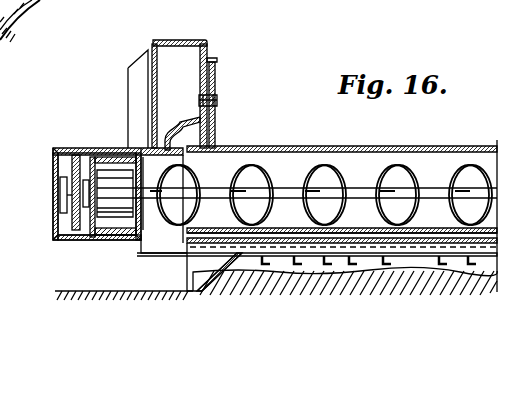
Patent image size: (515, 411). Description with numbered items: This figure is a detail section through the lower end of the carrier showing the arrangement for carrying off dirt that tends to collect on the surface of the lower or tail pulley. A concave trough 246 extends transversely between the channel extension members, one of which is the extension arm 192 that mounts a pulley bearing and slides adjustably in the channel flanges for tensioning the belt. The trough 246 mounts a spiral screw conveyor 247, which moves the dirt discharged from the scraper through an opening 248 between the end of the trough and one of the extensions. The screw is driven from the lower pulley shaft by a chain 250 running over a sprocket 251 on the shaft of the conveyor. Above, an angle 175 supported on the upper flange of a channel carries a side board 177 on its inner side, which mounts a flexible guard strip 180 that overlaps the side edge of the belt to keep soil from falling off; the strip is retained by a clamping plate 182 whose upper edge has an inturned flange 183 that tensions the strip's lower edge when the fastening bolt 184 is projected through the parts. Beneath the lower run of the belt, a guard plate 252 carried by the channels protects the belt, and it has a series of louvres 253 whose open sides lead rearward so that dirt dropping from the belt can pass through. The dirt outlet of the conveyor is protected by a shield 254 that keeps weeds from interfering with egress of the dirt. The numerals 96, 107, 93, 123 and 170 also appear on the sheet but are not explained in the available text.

The fragment of adjacent figure 96 is at (23, 21).
The fragment of adjacent figure 107 is at (268, 5).
The fragment of adjacent figure 93 is at (300, 5).
The trough top plate 123 is at (212, 147).
The conveyor trough 170 is at (346, 142).
The angle 175 is at (135, 103).
The side board 177 is at (208, 42).
The guard strip 180 is at (203, 128).
The clamping plate 182 is at (216, 82).
The inturned flange 183 is at (216, 61).
The fastening bolt 184 is at (218, 101).
The extension arm 192 is at (130, 148).
The concave trough 246 is at (263, 225).
The spiral screw conveyor 247 is at (300, 184).
The opening 248 is at (140, 255).
The chain 250 is at (57, 240).
The sprocket 251 is at (56, 210).
The guard plate 252 is at (190, 256).
The louvre 253 is at (337, 225).
The shield 254 is at (193, 287).